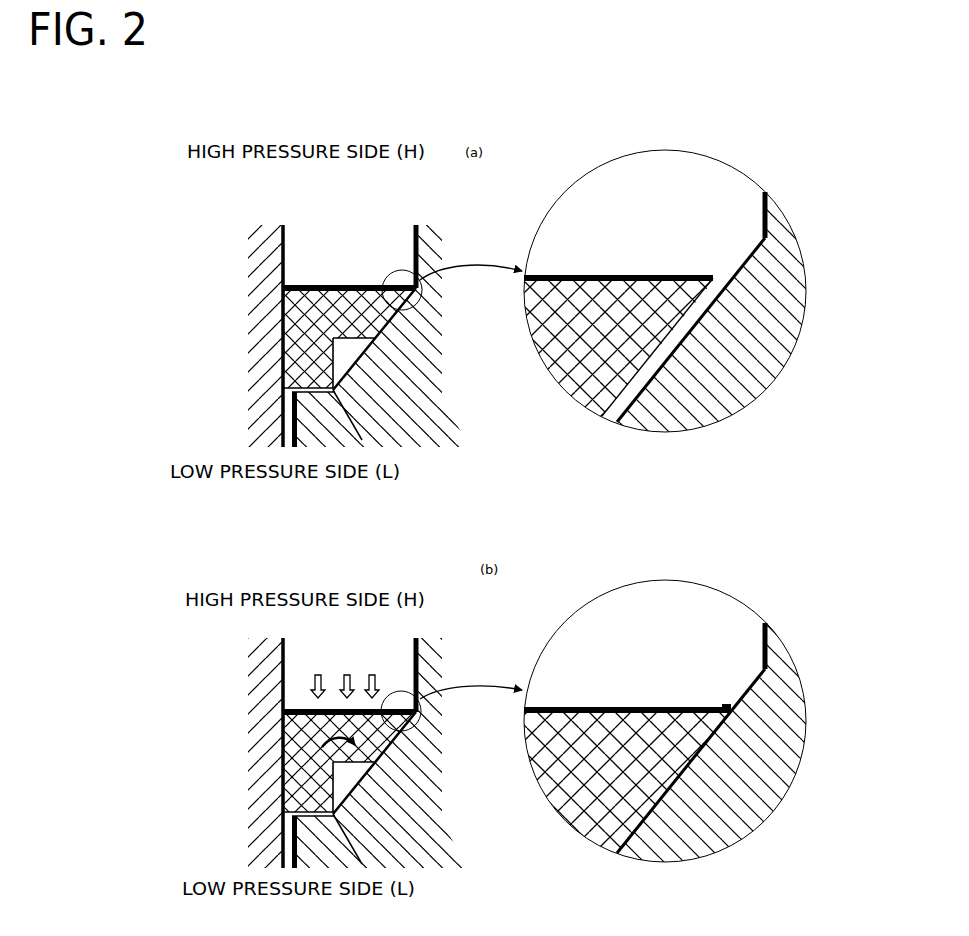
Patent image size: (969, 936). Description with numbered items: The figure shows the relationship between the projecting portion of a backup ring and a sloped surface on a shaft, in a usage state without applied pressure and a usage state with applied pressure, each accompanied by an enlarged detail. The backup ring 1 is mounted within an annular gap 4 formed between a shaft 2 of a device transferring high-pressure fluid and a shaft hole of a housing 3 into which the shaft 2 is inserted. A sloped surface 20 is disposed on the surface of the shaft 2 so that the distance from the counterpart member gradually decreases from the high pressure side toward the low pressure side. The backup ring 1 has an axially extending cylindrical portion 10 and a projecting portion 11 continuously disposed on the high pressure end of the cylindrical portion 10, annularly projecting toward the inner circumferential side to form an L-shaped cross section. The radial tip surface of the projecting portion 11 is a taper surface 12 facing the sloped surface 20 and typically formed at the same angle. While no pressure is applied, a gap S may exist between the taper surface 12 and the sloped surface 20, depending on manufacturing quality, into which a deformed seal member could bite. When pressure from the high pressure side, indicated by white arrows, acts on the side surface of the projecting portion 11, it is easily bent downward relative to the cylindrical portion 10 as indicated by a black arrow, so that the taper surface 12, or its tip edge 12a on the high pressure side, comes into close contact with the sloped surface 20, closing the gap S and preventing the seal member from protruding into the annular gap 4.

The backup ring 1 is at (282, 324).
The shaft 2 is at (430, 337).
The housing 3 is at (272, 227).
The annular gap 4 is at (280, 288).
The cylindrical portion 10 is at (282, 378).
The projecting portion 11 is at (360, 287).
The taper surface 12 is at (381, 287).
The tip edge 12a is at (728, 710).
The sloped surface 20 is at (355, 372).
The gap S is at (720, 280).